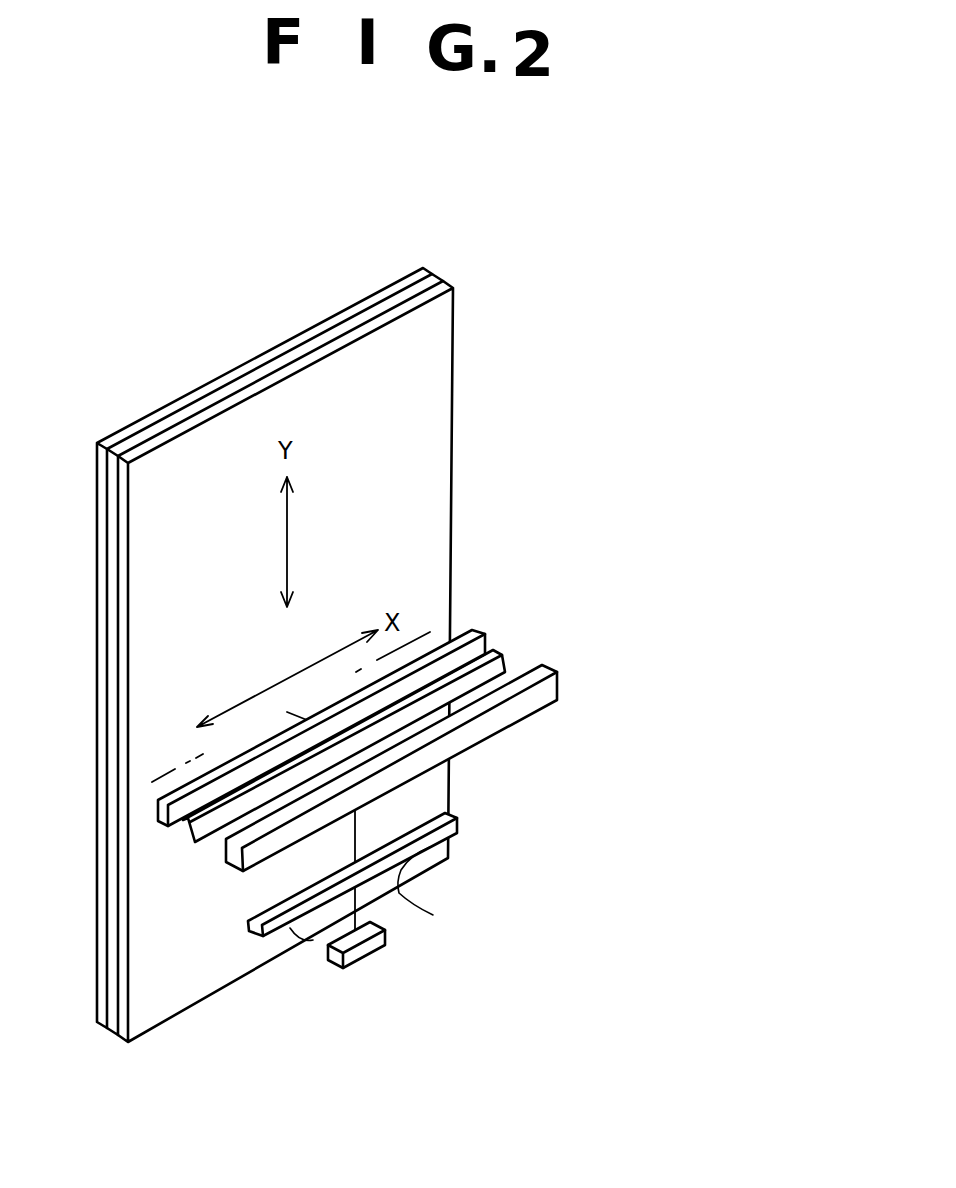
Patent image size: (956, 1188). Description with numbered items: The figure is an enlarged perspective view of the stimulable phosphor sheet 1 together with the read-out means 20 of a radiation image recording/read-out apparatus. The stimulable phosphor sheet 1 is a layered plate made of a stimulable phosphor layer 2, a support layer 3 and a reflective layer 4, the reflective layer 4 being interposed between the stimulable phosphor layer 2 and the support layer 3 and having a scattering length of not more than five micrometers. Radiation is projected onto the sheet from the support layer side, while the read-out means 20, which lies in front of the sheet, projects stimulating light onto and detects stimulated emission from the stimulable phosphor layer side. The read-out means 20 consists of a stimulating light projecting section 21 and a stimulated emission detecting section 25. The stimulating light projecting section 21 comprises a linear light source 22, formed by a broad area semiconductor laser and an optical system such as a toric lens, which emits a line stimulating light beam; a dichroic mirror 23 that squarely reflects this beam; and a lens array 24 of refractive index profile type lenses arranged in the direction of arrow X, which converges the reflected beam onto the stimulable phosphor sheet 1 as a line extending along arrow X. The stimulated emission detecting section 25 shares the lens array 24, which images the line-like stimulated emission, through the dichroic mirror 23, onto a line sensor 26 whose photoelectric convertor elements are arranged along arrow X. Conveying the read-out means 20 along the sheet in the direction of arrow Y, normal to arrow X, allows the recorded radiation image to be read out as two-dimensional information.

The stimulable phosphor sheet 1 is at (310, 587).
The stimulable phosphor layer 2 is at (357, 190).
The support layer 3 is at (411, 274).
The reflective layer 4 is at (435, 274).
The read-out means 20 is at (477, 766).
The stimulating light projecting section 21 is at (471, 887).
The linear light source 22 is at (388, 932).
The dichroic mirror 23 is at (505, 663).
The lens array 24 is at (482, 630).
The stimulated emission detecting section 25 is at (426, 717).
The line sensor 26 is at (541, 706).